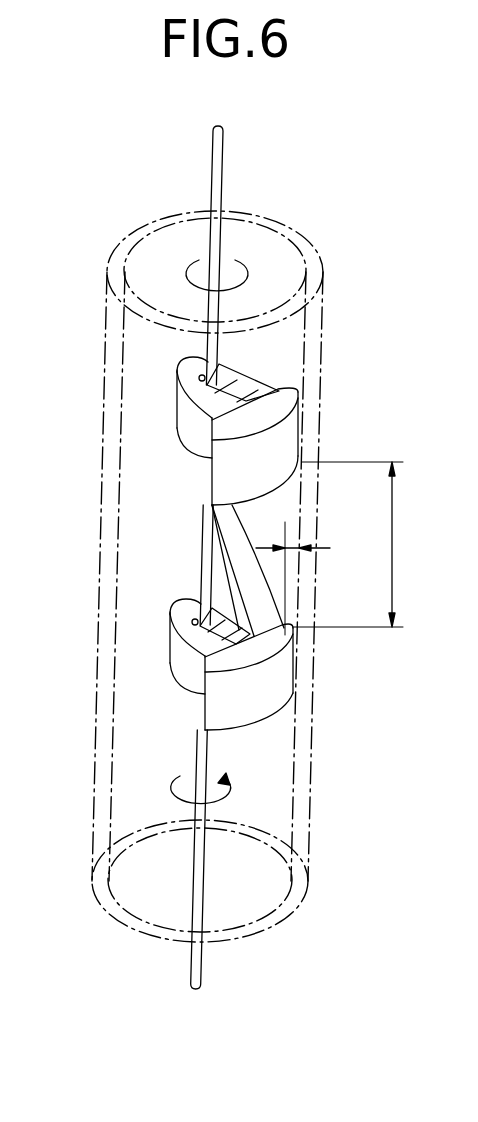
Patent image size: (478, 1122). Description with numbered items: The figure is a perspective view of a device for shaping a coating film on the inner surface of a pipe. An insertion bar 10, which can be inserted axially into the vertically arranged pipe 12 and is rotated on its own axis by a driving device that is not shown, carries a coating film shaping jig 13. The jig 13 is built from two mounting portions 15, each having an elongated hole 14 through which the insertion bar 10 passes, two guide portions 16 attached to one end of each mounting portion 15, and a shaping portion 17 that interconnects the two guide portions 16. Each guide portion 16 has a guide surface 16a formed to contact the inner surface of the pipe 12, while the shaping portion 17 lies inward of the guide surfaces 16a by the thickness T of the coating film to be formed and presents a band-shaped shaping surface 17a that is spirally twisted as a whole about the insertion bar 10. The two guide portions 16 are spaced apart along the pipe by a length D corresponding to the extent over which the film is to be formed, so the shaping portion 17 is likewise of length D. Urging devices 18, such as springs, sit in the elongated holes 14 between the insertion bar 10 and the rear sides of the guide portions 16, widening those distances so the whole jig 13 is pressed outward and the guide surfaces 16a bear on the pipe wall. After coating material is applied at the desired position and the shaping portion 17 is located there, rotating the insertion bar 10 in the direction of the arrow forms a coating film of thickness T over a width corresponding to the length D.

The insertion bar 10 is at (219, 158).
The pipe 12 is at (122, 249).
The coating film shaping jig 13 is at (167, 395).
The elongated holes 14 is at (192, 366).
The mounting portions 15 is at (187, 428).
The guide portions 16 is at (280, 400).
The guide surfaces 16a is at (287, 438).
The shaping portion 17 is at (233, 578).
The shaping surface 17a is at (257, 588).
The urging devices 18 is at (240, 395).
The length D is at (357, 544).
The thickness T is at (293, 573).